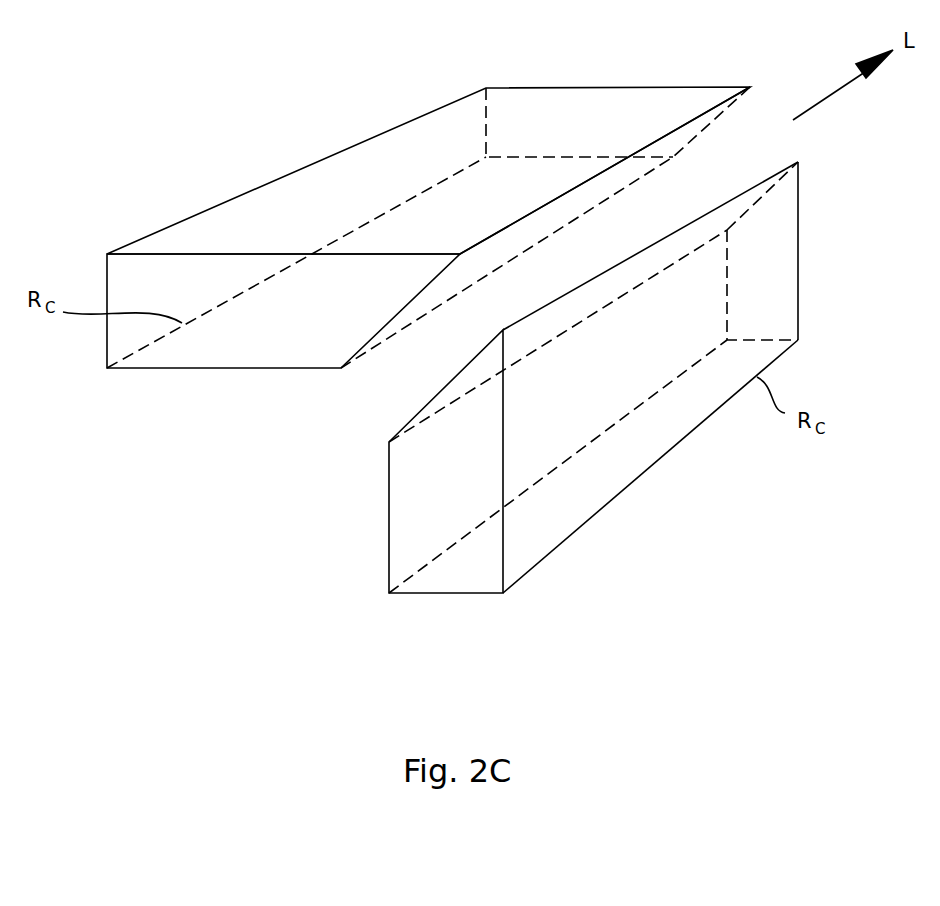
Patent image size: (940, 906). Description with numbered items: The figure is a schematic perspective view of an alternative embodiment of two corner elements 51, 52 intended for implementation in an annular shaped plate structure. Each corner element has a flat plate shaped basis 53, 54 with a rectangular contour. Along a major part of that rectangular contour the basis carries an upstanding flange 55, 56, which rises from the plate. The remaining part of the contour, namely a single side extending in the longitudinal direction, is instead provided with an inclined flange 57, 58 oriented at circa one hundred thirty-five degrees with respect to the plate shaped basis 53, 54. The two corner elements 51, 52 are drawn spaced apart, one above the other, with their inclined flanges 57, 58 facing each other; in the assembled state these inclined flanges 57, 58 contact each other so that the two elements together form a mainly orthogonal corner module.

The corner element 51 is at (428, 249).
The second prism element 52 is at (584, 406).
The plate shaped basis 53 is at (486, 213).
The plate shaped basis 54 is at (650, 375).
The upstanding flange 55 is at (360, 187).
The upstanding flange 56 is at (467, 570).
The inclined flange 57 is at (607, 183).
The inclined flange 58 is at (622, 282).